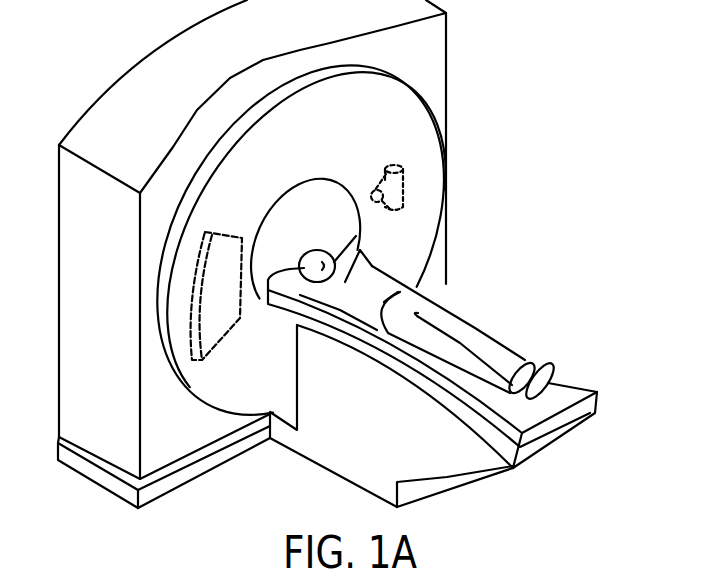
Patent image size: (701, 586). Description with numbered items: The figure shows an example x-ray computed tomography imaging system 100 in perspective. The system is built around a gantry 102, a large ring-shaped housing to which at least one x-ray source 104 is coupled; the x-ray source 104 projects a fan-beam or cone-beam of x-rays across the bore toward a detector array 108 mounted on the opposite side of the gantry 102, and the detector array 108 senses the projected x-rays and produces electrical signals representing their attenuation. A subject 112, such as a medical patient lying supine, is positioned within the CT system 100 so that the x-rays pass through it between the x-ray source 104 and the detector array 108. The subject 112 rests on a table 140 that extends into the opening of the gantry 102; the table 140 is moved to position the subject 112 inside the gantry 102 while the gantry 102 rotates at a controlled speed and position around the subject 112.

The CT imaging system 100 is at (536, 60).
The gantry 102 is at (443, 147).
The x-ray source 104 is at (386, 151).
The detector array 108 is at (234, 220).
The subject 112 is at (382, 256).
The table 140 is at (580, 378).